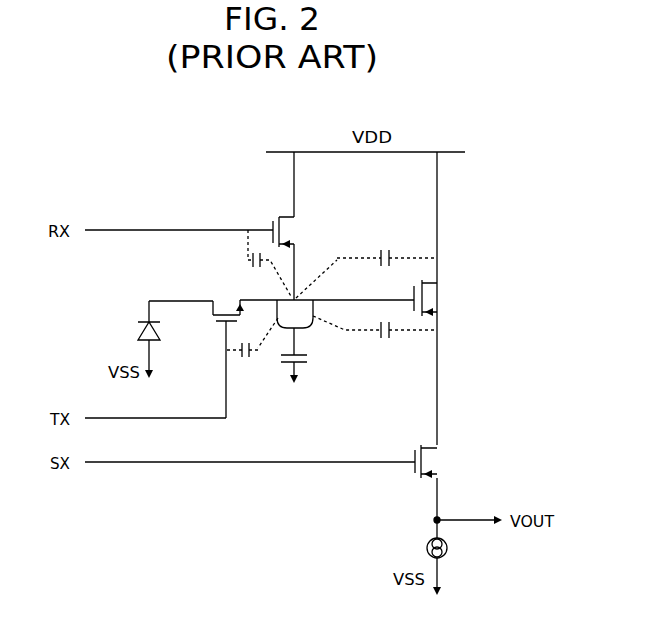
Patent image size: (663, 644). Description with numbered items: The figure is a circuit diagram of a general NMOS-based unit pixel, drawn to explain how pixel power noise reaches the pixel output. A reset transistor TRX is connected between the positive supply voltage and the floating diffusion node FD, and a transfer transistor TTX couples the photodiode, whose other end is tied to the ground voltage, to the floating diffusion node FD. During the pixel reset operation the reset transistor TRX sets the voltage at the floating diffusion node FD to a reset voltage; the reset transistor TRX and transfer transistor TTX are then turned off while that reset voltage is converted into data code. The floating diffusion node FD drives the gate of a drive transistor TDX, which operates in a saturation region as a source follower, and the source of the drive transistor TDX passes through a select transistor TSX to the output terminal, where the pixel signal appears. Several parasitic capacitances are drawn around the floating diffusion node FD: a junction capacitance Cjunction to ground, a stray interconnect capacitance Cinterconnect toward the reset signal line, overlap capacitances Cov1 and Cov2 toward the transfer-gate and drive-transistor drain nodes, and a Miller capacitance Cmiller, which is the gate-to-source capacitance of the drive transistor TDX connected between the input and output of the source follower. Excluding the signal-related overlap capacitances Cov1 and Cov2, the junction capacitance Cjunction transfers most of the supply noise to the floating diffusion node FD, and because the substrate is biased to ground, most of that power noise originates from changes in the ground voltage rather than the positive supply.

The reset transistor TRX is at (301, 232).
The transfer transistor TTX is at (196, 348).
The drive transistor TDX is at (443, 298).
The select transistor TSX is at (443, 461).
The floating diffusion node FD is at (295, 314).
The junction capacitance Cjunction is at (307, 370).
The interconnect stray capacitance Cinterconnect is at (227, 264).
The first overlap capacitance Cov1 is at (252, 349).
The second overlap capacitance Cov2 is at (366, 263).
The Miller capacitance Cmiller is at (375, 339).